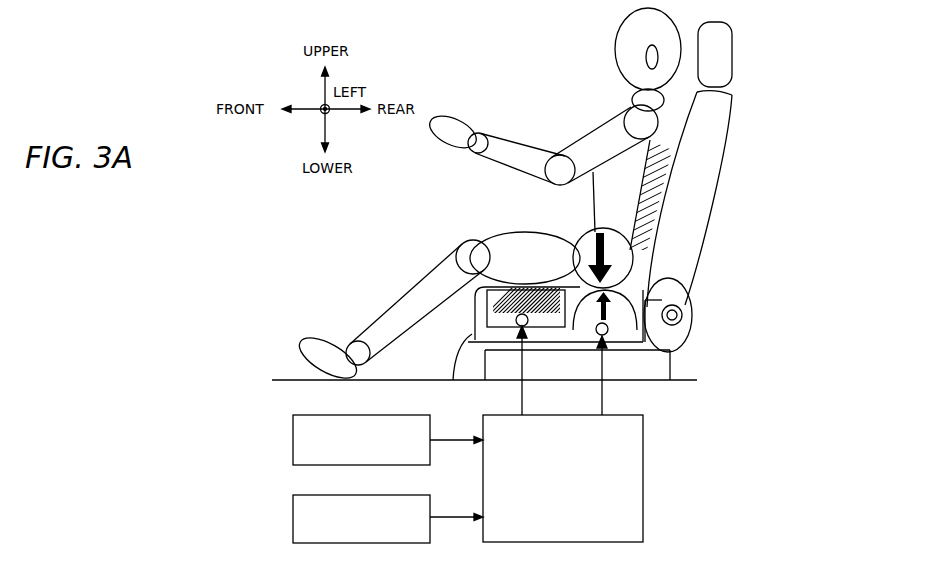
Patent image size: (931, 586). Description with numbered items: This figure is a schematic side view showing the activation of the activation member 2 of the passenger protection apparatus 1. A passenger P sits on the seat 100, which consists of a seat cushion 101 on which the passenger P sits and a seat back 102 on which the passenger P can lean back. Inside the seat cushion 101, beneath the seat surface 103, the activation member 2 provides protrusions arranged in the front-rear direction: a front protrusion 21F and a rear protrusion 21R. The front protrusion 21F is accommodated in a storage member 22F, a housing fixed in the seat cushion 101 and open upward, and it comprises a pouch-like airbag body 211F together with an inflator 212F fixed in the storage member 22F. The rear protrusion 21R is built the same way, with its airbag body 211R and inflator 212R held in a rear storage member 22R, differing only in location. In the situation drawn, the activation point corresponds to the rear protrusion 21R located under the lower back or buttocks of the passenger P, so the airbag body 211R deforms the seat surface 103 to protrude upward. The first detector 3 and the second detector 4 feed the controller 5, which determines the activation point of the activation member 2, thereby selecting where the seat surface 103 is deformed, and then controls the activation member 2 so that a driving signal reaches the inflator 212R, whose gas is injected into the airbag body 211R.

The passenger protection apparatus 1 is at (749, 478).
The activation member 2 is at (534, 332).
The first detector 3 is at (293, 440).
The second detector 4 is at (293, 517).
The controller 5 is at (643, 485).
The front protrusion 21F is at (428, 329).
The airbag body 211F is at (490, 304).
The inflator 212F is at (490, 320).
The storage member 22F is at (478, 300).
The rear protrusion 21R is at (703, 369).
The airbag body 211R is at (687, 341).
The inflator 212R is at (640, 348).
The storage member 22R is at (623, 352).
The seat 100 is at (591, 216).
The seat cushion 101 is at (463, 341).
The seat back 102 is at (714, 132).
The seat surface 103 is at (692, 284).
The passenger P is at (543, 106).